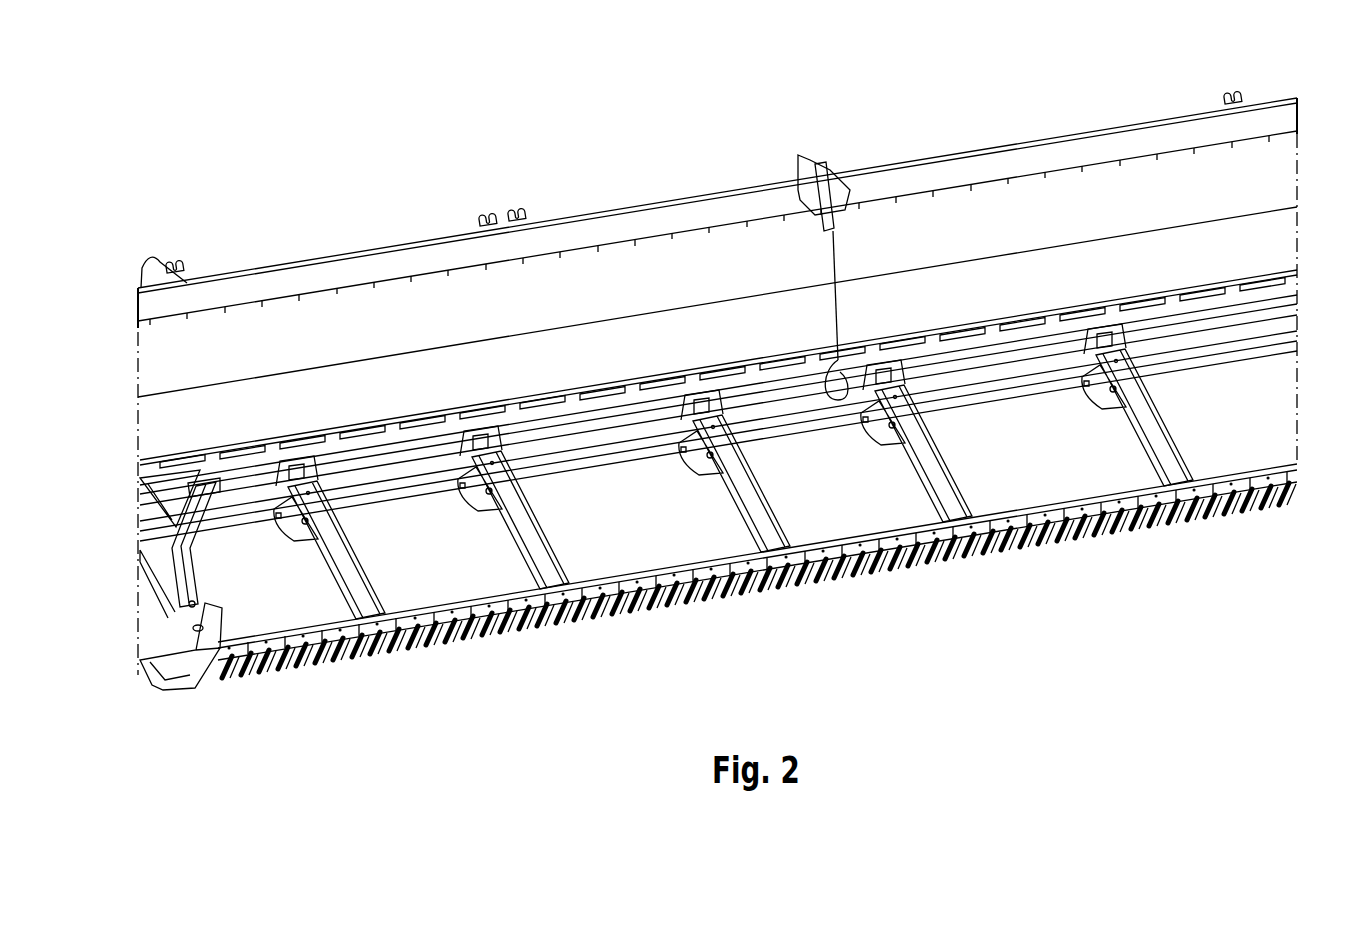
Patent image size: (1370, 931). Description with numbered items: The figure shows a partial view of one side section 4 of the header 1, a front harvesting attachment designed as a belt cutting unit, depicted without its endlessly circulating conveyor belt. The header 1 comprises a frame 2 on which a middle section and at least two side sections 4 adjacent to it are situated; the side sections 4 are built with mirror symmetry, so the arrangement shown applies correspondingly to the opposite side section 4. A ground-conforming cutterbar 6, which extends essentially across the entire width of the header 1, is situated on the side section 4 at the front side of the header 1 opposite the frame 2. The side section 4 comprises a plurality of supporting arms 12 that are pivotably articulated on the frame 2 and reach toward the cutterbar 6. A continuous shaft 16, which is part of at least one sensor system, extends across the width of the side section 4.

The header 1 is at (717, 373).
The frame 2 is at (1302, 307).
The side section 4 is at (334, 238).
The ground-conforming cutterbar 6 is at (338, 664).
The supporting arm 12 is at (378, 598).
The continuous shaft 16 is at (1055, 367).